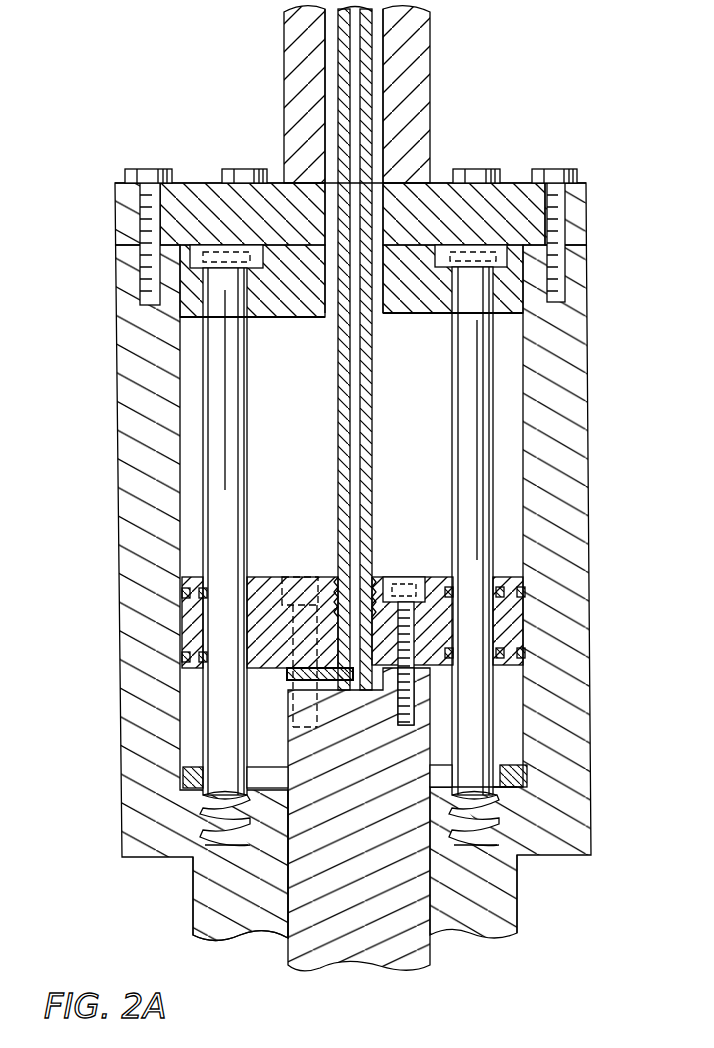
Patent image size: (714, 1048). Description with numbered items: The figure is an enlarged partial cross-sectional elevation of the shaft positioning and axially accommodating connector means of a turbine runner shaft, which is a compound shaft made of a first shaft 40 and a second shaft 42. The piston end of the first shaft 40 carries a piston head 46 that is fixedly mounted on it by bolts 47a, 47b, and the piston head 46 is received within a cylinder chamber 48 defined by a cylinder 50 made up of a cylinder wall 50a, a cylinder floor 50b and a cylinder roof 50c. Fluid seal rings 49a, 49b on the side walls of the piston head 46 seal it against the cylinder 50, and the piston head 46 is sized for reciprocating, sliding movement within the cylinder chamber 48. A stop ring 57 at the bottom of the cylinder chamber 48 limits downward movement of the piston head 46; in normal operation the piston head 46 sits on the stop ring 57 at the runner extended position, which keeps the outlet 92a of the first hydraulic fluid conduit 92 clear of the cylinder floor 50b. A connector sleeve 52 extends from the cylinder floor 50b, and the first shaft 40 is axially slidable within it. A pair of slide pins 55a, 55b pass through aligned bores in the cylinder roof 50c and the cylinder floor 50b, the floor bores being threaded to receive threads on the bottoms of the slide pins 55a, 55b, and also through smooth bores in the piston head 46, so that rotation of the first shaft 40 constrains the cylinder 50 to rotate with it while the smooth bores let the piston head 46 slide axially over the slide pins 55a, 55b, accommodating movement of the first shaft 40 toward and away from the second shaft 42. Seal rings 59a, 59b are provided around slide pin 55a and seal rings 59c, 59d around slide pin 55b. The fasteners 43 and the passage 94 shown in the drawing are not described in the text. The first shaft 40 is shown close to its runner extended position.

The first shaft 40 is at (360, 935).
The second shaft 42 is at (432, 70).
The bolts 43 is at (232, 169).
The piston head 46 is at (275, 577).
The bolt 47a is at (404, 575).
The bolt 47b is at (300, 560).
The cylinder chamber 48 is at (292, 412).
The fluid seal ring 49a is at (527, 598).
The fluid seal ring 49b is at (527, 652).
The cylinder 50 is at (345, 562).
The cylinder wall 50a is at (558, 398).
The cylinder floor 50b is at (268, 828).
The cylinder roof 50c is at (412, 298).
The connector sleeve 52 is at (500, 906).
The slide pin 55a is at (228, 372).
The slide pin 55b is at (466, 386).
The stop ring 57 is at (265, 770).
The seal ring 59a is at (524, 586).
The seal ring 59b is at (526, 660).
The seal ring 59c is at (182, 592).
The seal ring 59d is at (182, 656).
The first hydraulic fluid conduit 92 is at (355, 462).
The outlet 92a is at (340, 680).
The bore / annular passage 94 is at (378, 127).